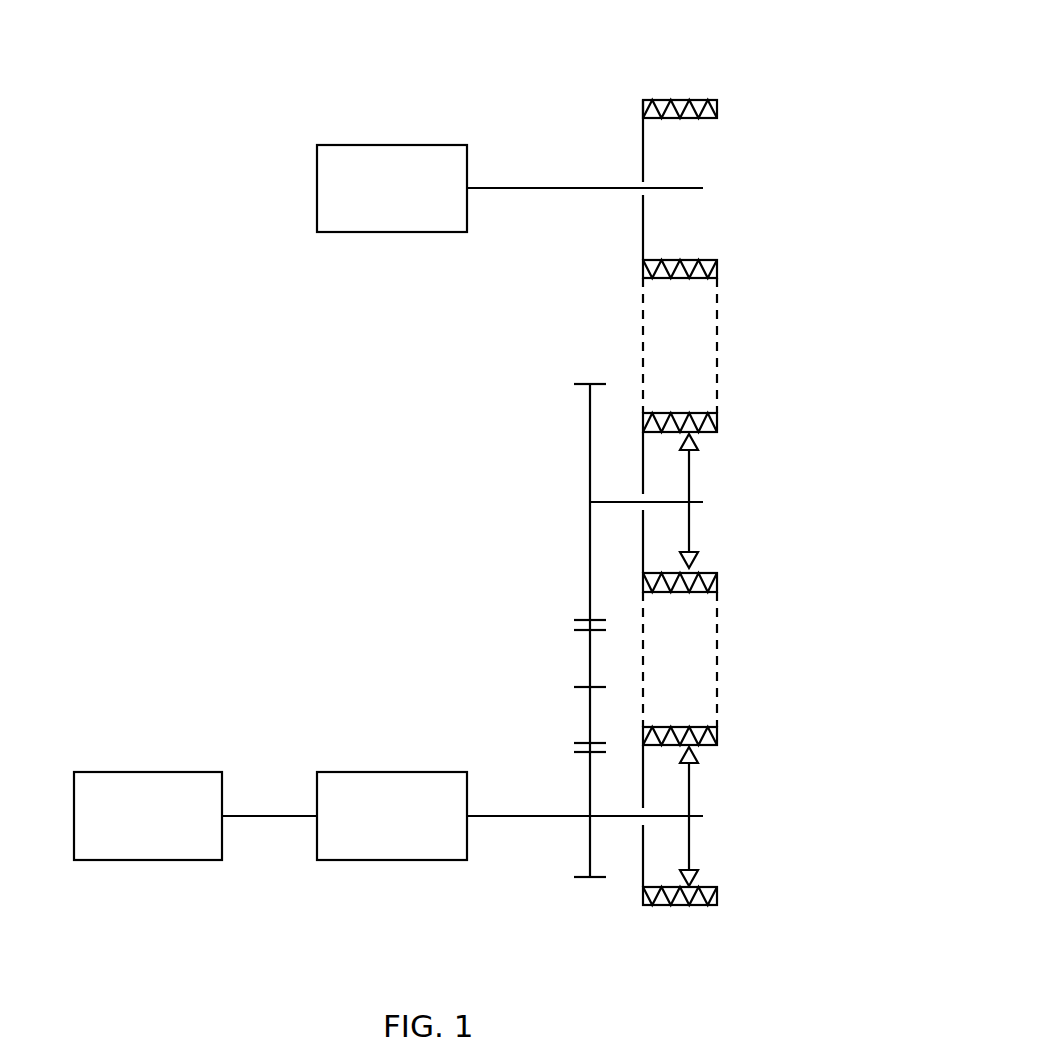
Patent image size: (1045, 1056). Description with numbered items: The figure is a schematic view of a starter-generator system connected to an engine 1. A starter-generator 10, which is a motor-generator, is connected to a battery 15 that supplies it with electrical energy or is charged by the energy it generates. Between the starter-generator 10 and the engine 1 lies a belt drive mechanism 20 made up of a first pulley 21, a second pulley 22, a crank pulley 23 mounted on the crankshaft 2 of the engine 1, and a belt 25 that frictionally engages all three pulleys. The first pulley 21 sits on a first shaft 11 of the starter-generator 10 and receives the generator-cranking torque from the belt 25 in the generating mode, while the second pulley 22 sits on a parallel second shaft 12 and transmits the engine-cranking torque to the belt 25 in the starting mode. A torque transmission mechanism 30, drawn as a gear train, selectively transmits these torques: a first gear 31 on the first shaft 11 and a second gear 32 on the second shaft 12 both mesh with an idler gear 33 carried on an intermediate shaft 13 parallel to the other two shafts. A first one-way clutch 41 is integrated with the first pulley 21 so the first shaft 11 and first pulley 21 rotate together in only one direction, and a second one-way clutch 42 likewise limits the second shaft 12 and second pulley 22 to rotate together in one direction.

The engine 1 is at (390, 145).
The crankshaft 2 is at (551, 194).
The starter-generator 10 is at (392, 772).
The first shaft 11 is at (540, 814).
The second shaft 12 is at (613, 502).
The intermediate shaft 13 is at (590, 687).
The battery 15 is at (147, 772).
The belt drive mechanism 20 is at (681, 88).
The first pulley 21 is at (640, 858).
The second pulley 22 is at (643, 537).
The crank pulley 23 is at (643, 130).
The belt 25 is at (717, 337).
The torque transmission mechanism 30 is at (553, 678).
The first gear 31 is at (585, 848).
The second gear 32 is at (590, 584).
The idler gear 33 is at (590, 657).
The first one-way clutch 41 is at (689, 790).
The second one-way clutch 42 is at (689, 482).